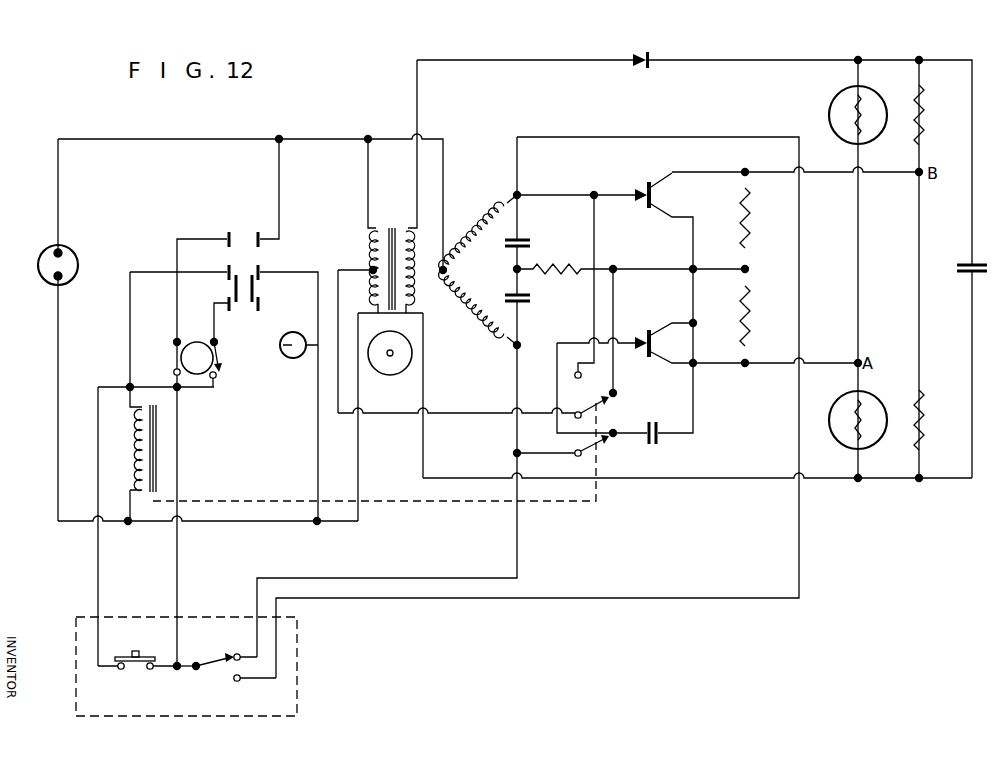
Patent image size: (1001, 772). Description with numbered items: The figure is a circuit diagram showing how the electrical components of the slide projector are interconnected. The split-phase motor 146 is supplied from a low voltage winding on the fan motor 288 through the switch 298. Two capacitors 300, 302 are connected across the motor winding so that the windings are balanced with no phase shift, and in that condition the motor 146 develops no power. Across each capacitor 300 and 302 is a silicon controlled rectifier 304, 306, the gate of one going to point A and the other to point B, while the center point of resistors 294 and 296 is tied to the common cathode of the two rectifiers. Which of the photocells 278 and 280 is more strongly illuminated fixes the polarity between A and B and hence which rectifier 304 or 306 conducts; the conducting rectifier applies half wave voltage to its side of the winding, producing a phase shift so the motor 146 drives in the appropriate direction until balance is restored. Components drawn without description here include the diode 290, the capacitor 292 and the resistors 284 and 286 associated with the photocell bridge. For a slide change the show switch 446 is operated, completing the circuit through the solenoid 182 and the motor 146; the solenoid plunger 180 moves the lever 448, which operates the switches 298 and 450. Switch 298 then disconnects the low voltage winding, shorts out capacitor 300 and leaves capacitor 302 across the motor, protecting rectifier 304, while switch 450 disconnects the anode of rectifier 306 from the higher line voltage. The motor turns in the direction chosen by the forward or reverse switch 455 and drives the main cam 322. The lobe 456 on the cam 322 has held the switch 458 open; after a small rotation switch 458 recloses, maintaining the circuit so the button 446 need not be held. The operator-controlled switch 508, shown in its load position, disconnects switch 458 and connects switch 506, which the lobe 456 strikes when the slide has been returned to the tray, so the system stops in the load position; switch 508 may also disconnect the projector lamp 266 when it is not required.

The operator-controlled switch 508 is at (247, 232).
The switch 458 is at (175, 342).
The main cam 322 is at (197, 341).
The lobe 456 is at (216, 352).
The switch 506 is at (222, 368).
The projector lamp 266 is at (292, 359).
The solenoid 182 is at (121, 450).
The solenoid plunger 180 is at (160, 437).
The show switch 446 is at (145, 656).
The forward or reverse switch 455 is at (228, 656).
The lever 448 is at (391, 502).
The fan motor 288 is at (403, 374).
The split-phase motor 146 is at (457, 302).
The capacitor 300 is at (532, 243).
The capacitor 302 is at (532, 299).
The silicon controlled rectifier 304 is at (646, 184).
The silicon controlled rectifier 306 is at (646, 330).
The switch 298 is at (616, 396).
The switch 450 is at (612, 443).
The diode 290 is at (638, 55).
The photocell 278 is at (835, 98).
The resistor 284 is at (925, 130).
The resistor 294 is at (750, 226).
The resistor 296 is at (758, 306).
The capacitor 292 is at (955, 267).
The photocell 280 is at (840, 398).
The resistor 286 is at (924, 410).